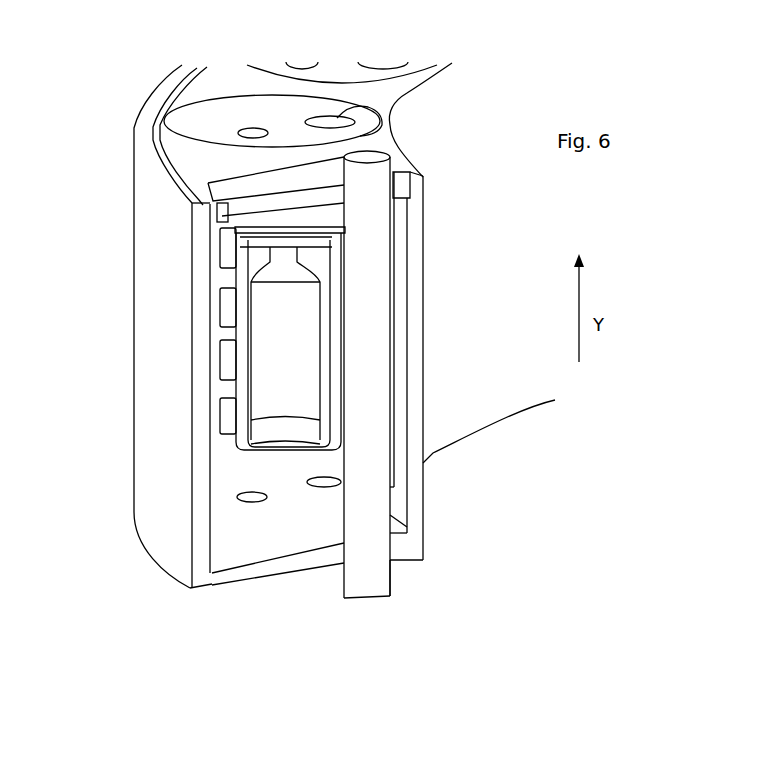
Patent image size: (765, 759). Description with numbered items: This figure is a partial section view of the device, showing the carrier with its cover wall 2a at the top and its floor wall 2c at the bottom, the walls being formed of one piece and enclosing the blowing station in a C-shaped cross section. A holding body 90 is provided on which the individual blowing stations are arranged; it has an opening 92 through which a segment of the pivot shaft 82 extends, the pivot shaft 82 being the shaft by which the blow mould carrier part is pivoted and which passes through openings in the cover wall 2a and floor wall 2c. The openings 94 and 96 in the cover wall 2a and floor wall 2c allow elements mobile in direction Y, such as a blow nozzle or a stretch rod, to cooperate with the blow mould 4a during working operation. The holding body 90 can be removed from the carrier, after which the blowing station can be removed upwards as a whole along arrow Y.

The cover wall 2a is at (187, 153).
The floor wall 2c is at (308, 565).
The blow mould 4a is at (248, 322).
The pivot shaft 82 is at (370, 223).
The holding body 90 is at (205, 119).
The opening 92 is at (407, 93).
The opening 94 is at (385, 142).
The opening 96 is at (252, 502).